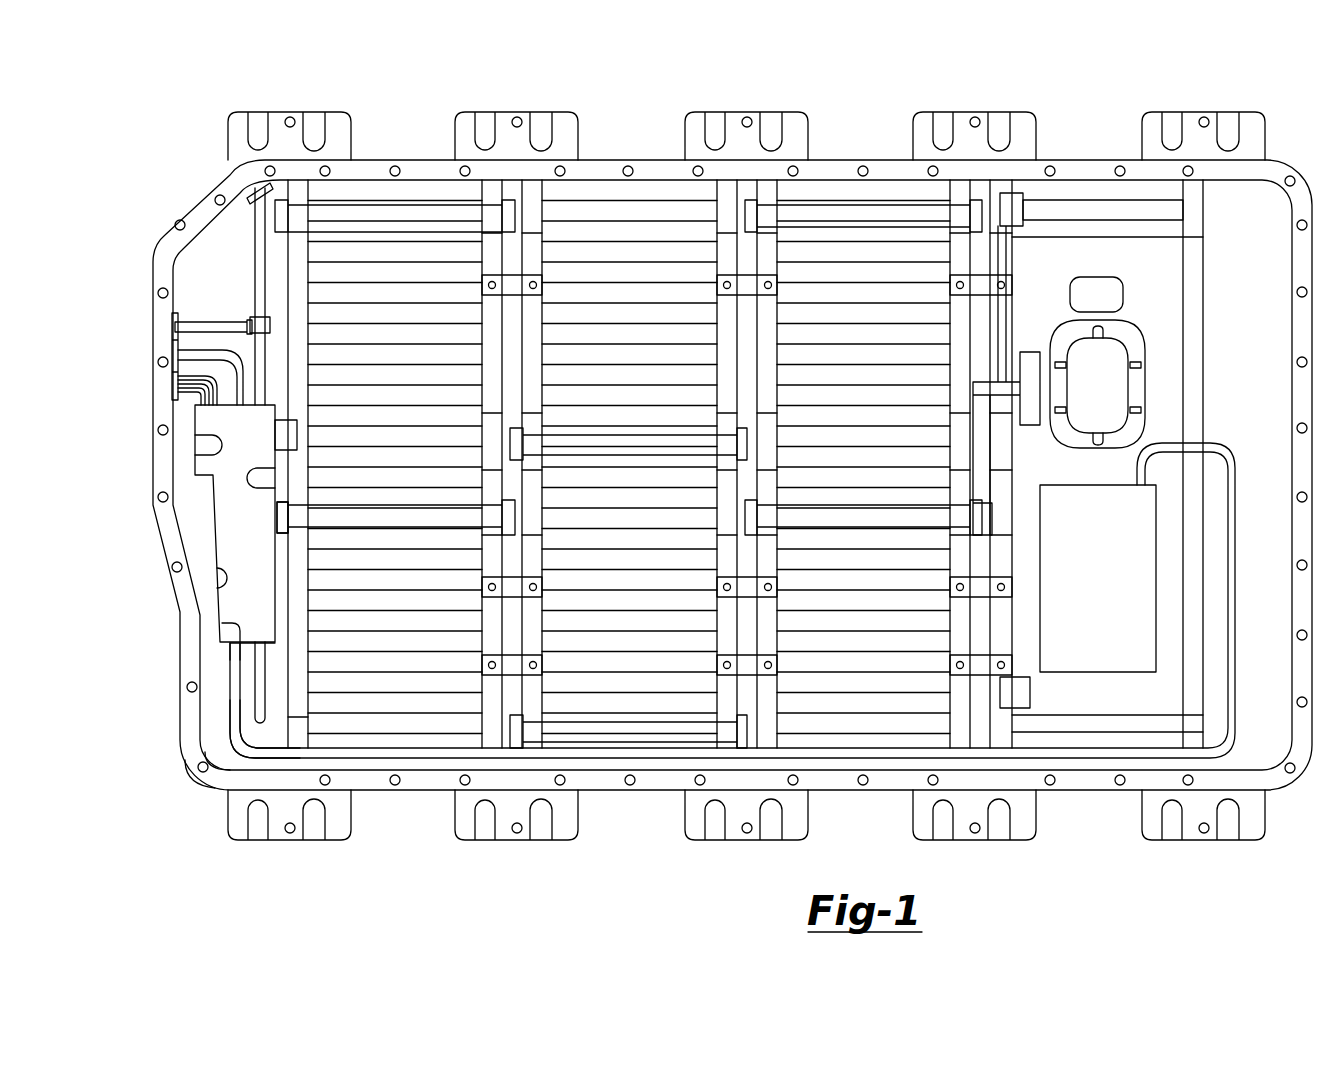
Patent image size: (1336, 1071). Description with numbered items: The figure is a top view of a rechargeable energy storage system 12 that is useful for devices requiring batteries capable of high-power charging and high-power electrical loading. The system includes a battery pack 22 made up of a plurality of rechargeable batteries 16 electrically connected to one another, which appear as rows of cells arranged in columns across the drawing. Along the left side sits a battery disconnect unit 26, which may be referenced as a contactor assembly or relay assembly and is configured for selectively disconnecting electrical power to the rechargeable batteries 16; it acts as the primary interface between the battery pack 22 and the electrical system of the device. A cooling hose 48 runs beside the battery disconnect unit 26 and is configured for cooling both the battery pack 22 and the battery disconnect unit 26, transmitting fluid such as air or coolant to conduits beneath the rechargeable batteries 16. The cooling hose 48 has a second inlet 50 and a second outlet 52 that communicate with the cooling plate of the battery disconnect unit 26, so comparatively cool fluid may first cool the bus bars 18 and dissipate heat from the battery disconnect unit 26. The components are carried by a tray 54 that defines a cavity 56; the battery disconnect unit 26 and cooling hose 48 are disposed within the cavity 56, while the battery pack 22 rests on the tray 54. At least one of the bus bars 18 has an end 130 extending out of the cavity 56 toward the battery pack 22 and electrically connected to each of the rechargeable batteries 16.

The rechargeable energy storage system 12 is at (165, 107).
The rechargeable batteries 16 is at (632, 240).
The bus bars 18 is at (418, 200).
The battery pack 22 is at (660, 103).
The battery disconnect unit 26 is at (210, 522).
The cooling hose 48 is at (255, 268).
The second inlet 50 is at (262, 405).
The second outlet 52 is at (255, 658).
The tray 54 is at (200, 778).
The cavity 56 is at (227, 759).
The end 130 is at (297, 435).